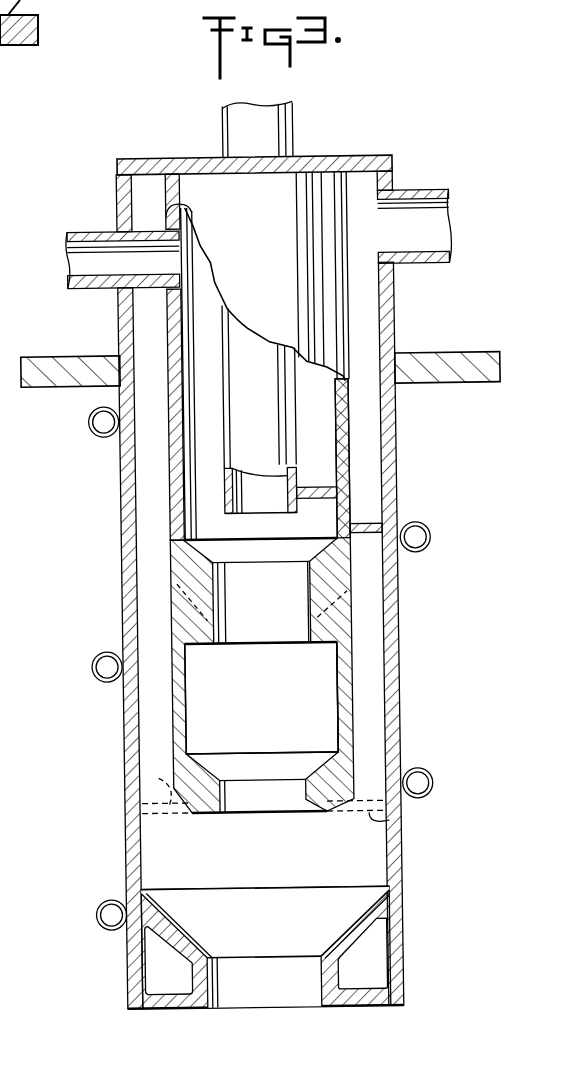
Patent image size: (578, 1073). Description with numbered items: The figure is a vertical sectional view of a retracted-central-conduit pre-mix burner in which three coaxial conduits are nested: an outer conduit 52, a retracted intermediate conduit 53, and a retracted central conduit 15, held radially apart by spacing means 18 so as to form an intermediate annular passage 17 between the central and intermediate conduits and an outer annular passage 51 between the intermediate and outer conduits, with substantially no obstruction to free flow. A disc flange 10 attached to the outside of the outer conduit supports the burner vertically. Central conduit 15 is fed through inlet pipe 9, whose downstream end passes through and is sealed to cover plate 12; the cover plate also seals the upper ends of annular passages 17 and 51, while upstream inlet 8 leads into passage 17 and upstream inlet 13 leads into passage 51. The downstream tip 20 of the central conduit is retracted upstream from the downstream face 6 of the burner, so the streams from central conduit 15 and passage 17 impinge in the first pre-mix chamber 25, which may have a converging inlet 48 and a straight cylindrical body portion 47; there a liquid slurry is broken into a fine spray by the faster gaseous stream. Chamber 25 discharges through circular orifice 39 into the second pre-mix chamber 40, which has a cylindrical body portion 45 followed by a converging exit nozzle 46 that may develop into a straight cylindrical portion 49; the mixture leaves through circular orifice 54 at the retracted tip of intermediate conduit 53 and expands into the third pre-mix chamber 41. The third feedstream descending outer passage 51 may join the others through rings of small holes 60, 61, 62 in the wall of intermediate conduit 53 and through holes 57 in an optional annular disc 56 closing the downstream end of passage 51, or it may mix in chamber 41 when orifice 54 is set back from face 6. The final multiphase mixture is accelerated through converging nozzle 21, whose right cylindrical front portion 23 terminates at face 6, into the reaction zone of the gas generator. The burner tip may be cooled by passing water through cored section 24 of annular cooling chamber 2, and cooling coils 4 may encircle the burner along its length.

The annular cooling chamber 2 is at (127, 968).
The cooling coils 4 is at (86, 914).
The downstream face of the burner 6 is at (213, 1010).
The upstream inlet 8 is at (89, 230).
The inlet pipe 9 is at (284, 130).
The disc flange 10 is at (441, 355).
The cover plate 12 is at (352, 160).
The upstream inlet 13 is at (413, 192).
The retracted central conduit 15 is at (269, 411).
The intermediate annular passage 17 is at (320, 423).
The spacing means 18 is at (322, 500).
The downstream tip of central conduit 20 is at (240, 513).
The converging exit nozzle 21 is at (331, 865).
The right cylindrical front portion 23 is at (268, 1005).
The cored section 24 is at (165, 1003).
The first pre-mix chamber 25 is at (266, 621).
The circular orifice 39 is at (232, 646).
The second pre-mix chamber 40 is at (266, 704).
The third pre-mix chamber 41 is at (272, 877).
The coaxial cylindrical body portion 45 is at (335, 732).
The converging exit nozzle 46 is at (252, 752).
The straight coaxial cylindrical body portion 47 is at (296, 648).
The converging inlet 48 is at (253, 548).
The straight cylindrical portion 49 is at (291, 806).
The outer annular passage 51 is at (366, 452).
The outer conduit 52 is at (396, 310).
The intermediate conduit 53 is at (268, 231).
The downstream tip of intermediate conduit 54 is at (236, 816).
The annular disc 56 is at (178, 820).
The small diameter holes 57 is at (150, 777).
The small diameter holes 60 is at (173, 457).
The small diameter holes 61 is at (185, 585).
The small diameter holes 62 is at (175, 685).